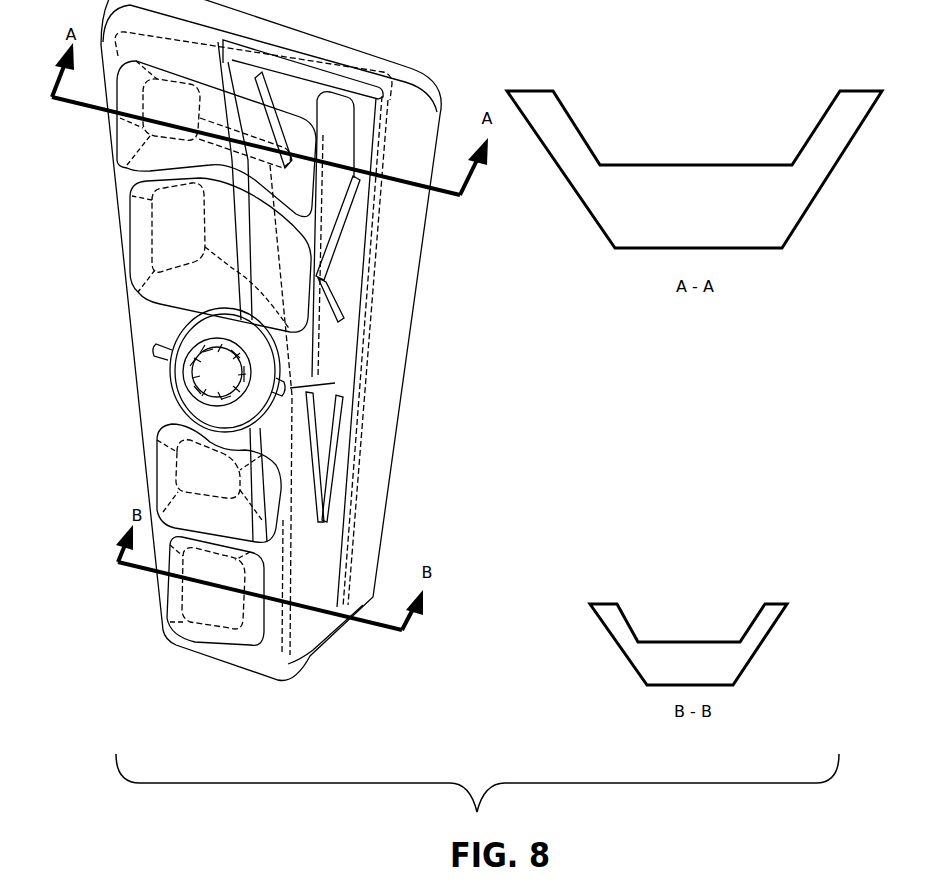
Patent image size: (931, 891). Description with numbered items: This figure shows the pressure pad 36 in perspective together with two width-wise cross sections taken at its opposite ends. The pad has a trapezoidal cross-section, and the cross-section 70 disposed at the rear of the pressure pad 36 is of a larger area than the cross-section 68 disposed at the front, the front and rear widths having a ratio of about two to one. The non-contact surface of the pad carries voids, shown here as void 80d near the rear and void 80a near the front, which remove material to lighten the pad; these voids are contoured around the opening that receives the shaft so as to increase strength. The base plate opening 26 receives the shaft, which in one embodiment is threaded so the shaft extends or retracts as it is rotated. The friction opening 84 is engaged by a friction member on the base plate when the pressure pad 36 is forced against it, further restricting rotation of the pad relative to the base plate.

The pressure pad 36 is at (393, 398).
The friction opening 84 is at (183, 333).
The base plate opening 26 is at (192, 346).
The cross-section 70 is at (790, 228).
The cross-section 68 is at (755, 650).
The void 80d is at (674, 147).
The void 80a is at (602, 603).